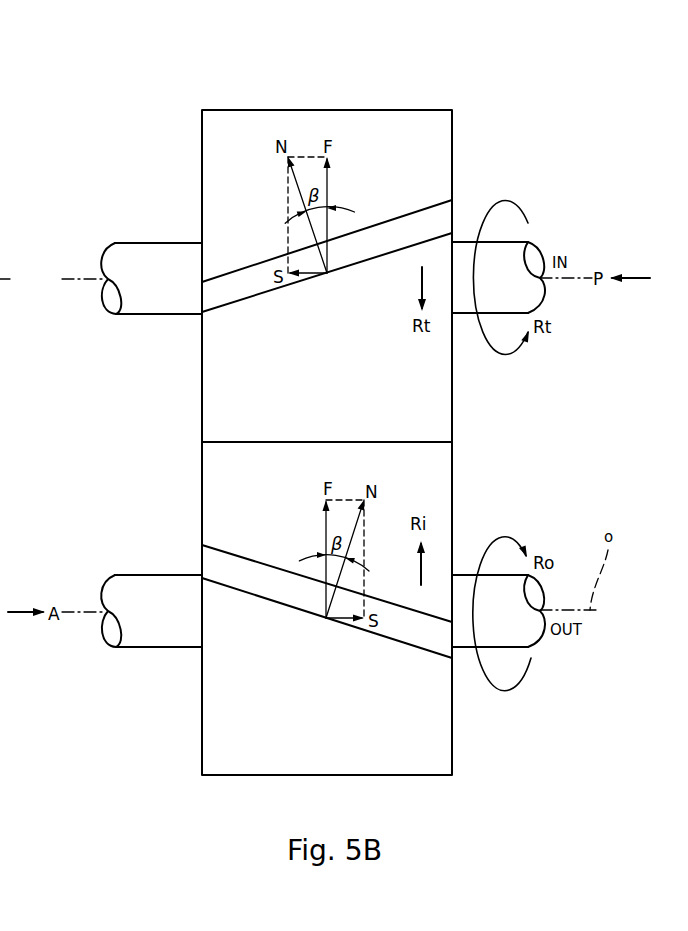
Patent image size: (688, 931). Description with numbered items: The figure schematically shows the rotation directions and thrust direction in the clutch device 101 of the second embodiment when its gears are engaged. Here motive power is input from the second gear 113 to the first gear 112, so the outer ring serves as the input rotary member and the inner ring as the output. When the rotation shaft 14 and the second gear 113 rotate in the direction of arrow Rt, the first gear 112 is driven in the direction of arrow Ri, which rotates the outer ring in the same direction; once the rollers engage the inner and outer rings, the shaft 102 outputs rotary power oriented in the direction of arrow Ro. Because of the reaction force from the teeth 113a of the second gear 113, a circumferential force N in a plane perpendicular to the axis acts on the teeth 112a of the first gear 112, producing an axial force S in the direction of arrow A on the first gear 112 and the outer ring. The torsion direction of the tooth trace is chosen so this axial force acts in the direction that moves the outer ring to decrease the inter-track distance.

The clutch device 101 is at (534, 145).
The rotation shaft 14 is at (146, 253).
The second gear 113 is at (220, 387).
The teeth of second gear 113a is at (253, 288).
The first gear 112 is at (222, 474).
The teeth of first gear 112a is at (242, 585).
The shaft 102 is at (145, 585).